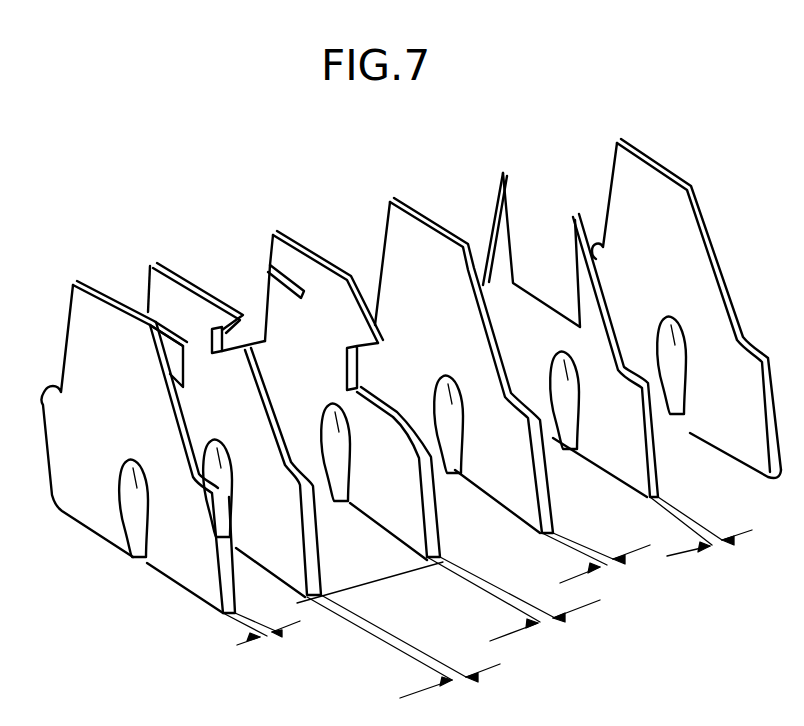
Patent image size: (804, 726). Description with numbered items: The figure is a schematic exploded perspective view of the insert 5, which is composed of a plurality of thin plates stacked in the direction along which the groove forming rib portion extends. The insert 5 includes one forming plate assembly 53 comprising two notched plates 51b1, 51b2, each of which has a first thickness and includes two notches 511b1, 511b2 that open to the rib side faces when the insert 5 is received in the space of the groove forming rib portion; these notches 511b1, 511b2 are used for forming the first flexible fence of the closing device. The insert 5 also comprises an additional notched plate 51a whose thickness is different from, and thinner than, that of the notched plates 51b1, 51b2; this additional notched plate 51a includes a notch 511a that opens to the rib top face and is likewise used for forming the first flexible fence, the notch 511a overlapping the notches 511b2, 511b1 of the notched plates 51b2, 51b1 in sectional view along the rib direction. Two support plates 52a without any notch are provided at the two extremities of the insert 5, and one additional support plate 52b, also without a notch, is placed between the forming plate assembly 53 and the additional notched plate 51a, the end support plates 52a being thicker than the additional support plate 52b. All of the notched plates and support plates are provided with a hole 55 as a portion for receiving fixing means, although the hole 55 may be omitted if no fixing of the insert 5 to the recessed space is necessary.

The insert 5 is at (207, 186).
The support plate 52a is at (97, 541).
The additional support plate 52b is at (380, 242).
The additional notched plate 51a is at (503, 172).
The notch 511a is at (553, 267).
The notched plate 51b1 is at (152, 262).
The notched plate 51b2 is at (280, 232).
The notch 511b1 is at (147, 313).
The notch 511b2 is at (268, 260).
The hole 55 is at (123, 460).
The forming plate assembly 53 is at (380, 580).